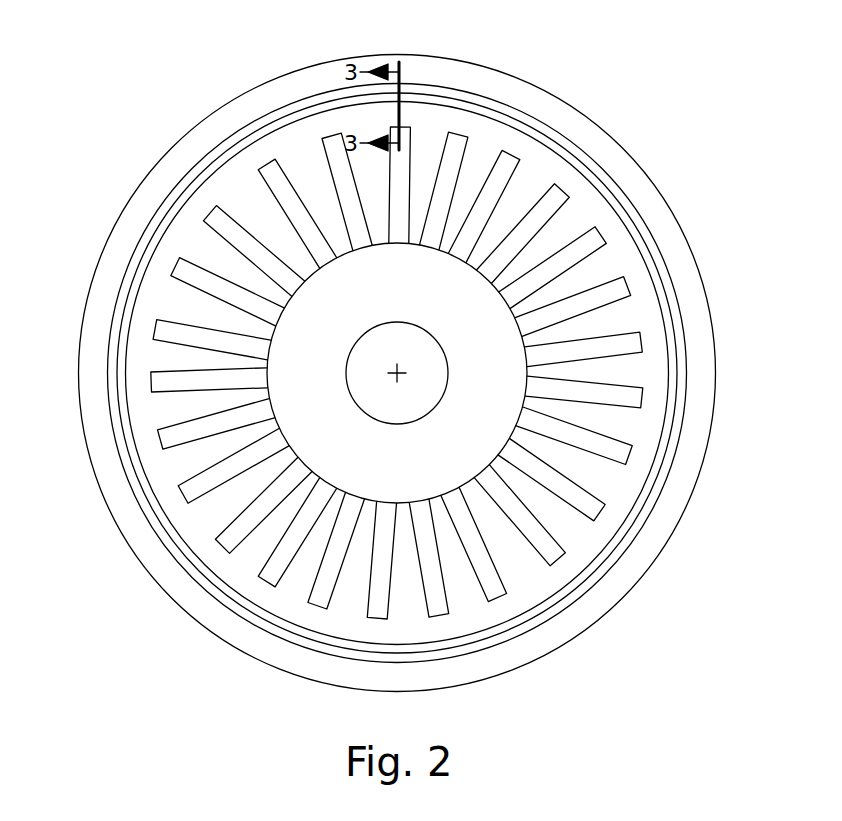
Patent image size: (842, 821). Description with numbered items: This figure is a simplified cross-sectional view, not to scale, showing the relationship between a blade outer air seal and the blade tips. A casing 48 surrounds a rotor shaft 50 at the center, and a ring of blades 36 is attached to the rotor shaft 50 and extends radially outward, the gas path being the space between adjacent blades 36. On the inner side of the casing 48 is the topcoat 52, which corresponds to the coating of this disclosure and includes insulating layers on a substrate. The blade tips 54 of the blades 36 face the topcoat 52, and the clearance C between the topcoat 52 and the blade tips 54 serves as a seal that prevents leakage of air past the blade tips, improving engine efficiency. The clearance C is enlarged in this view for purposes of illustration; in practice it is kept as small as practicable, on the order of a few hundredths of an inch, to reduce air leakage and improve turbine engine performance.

The blades 36 is at (435, 238).
The casing 48 is at (177, 591).
The rotor shaft 50 is at (460, 337).
The topcoat 52 is at (538, 114).
The blade tips 54 is at (560, 195).
The clearance c is at (207, 210).